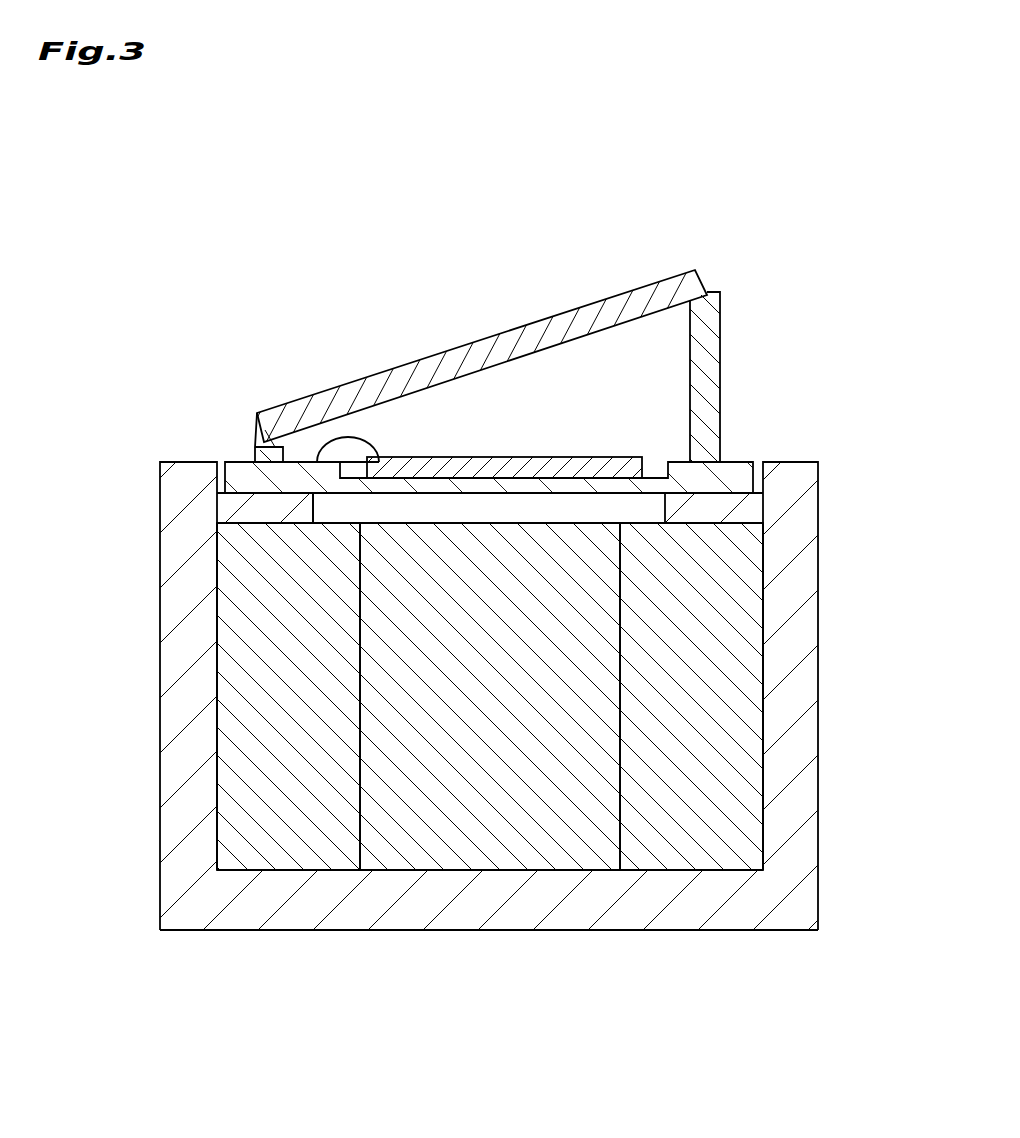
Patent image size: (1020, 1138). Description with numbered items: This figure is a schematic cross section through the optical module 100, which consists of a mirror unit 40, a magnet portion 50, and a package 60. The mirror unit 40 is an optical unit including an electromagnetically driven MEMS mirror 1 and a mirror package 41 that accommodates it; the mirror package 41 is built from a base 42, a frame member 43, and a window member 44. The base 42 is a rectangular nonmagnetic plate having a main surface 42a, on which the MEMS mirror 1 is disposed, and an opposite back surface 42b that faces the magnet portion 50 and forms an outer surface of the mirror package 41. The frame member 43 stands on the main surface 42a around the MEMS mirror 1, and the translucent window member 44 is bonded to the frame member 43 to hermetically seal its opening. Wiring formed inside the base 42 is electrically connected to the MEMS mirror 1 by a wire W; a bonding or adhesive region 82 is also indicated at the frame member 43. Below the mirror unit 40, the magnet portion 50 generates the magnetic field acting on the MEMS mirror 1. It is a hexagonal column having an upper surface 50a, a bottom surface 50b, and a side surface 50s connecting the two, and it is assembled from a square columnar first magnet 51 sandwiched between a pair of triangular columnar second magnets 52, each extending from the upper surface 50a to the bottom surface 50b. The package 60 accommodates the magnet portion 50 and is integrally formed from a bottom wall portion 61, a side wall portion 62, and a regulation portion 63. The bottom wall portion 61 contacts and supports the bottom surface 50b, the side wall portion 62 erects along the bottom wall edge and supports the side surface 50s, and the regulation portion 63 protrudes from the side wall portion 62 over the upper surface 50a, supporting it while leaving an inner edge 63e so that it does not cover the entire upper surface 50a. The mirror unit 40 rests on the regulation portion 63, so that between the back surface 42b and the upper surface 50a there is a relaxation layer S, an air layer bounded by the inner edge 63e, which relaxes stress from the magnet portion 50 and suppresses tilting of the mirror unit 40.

The optical module 100 is at (723, 190).
The mirror unit 40 is at (537, 350).
The mirror package 41 is at (710, 283).
The base 42 is at (492, 426).
The main surface 42a is at (313, 458).
The back surface 42b is at (487, 505).
The frame member 43 is at (273, 452).
The window member 44 is at (467, 353).
The adhesive 82 is at (545, 377).
The wire W is at (355, 437).
The relaxation layer S is at (444, 509).
The MEMS mirror 1 is at (606, 456).
The magnet portion 50 is at (510, 718).
The upper surface 50a is at (558, 523).
The bottom surface 50b is at (398, 872).
The side surface 50s is at (215, 768).
The first magnet 51 is at (557, 823).
The second magnet 52 is at (277, 823).
The package 60 is at (510, 695).
The bottom wall portion 61 is at (468, 912).
The side wall portion 62 is at (175, 651).
The regulation portion 63 is at (438, 481).
The inner edge 63e is at (314, 508).